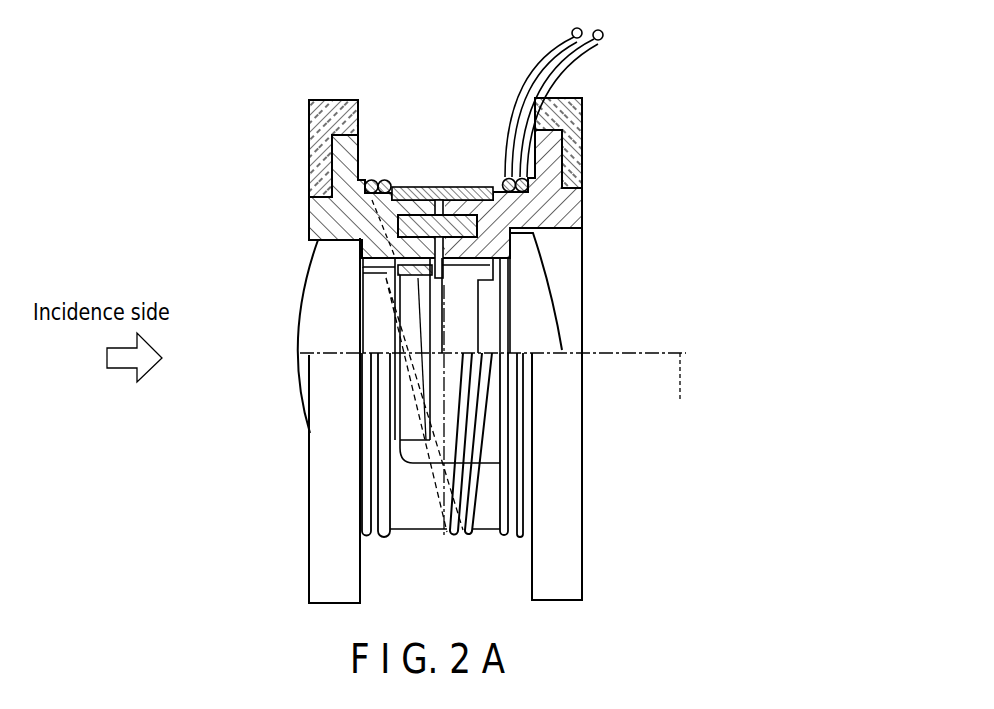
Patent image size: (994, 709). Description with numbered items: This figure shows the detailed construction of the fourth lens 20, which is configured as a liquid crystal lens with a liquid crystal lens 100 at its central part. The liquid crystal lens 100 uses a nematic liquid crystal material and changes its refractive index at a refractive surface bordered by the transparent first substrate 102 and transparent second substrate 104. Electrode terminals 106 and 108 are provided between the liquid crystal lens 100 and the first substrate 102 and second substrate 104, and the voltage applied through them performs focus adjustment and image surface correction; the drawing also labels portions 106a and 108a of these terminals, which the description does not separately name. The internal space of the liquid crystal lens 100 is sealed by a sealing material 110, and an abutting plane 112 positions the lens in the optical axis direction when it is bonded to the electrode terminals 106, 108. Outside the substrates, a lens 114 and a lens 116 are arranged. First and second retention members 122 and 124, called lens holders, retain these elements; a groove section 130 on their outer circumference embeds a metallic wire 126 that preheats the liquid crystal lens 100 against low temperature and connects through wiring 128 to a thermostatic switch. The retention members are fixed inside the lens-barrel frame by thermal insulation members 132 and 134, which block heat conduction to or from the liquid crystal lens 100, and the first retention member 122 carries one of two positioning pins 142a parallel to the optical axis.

The fourth lens 20 is at (450, 315).
The liquid crystal lens 100 is at (400, 425).
The first substrate 102 is at (375, 292).
The second substrate 104 is at (455, 292).
The electrode terminal 106 is at (372, 384).
The lens surface 106a is at (385, 342).
The electrode terminal 108 is at (502, 302).
The guide shaft end 108a is at (502, 331).
The sealing material 110 is at (362, 250).
The abutting plane 112 is at (490, 178).
The lens 114 is at (312, 316).
The lens 116 is at (530, 244).
The first retention member 122 is at (331, 178).
The second retention member 124 is at (572, 205).
The metallic wire 126 is at (374, 179).
The wiring 128 is at (580, 50).
The groove section 130 is at (393, 174).
The thermal insulation member 132 is at (308, 112).
The thermal insulation member 134 is at (582, 120).
The positioning pin 142a is at (428, 226).